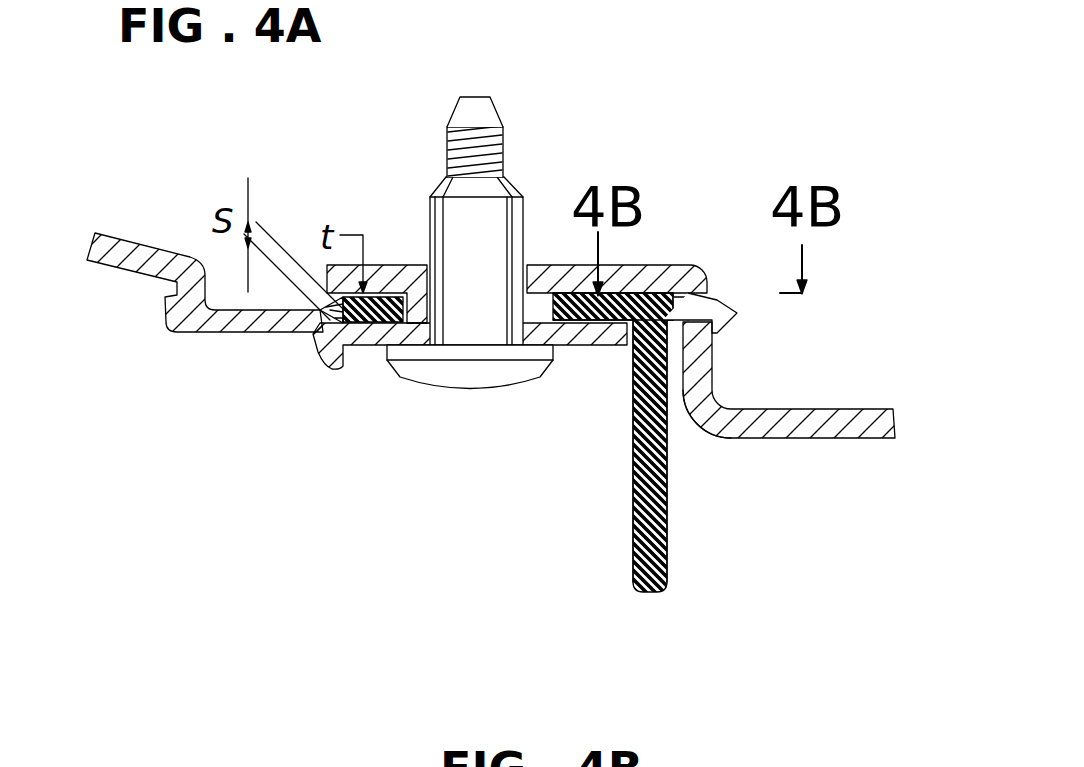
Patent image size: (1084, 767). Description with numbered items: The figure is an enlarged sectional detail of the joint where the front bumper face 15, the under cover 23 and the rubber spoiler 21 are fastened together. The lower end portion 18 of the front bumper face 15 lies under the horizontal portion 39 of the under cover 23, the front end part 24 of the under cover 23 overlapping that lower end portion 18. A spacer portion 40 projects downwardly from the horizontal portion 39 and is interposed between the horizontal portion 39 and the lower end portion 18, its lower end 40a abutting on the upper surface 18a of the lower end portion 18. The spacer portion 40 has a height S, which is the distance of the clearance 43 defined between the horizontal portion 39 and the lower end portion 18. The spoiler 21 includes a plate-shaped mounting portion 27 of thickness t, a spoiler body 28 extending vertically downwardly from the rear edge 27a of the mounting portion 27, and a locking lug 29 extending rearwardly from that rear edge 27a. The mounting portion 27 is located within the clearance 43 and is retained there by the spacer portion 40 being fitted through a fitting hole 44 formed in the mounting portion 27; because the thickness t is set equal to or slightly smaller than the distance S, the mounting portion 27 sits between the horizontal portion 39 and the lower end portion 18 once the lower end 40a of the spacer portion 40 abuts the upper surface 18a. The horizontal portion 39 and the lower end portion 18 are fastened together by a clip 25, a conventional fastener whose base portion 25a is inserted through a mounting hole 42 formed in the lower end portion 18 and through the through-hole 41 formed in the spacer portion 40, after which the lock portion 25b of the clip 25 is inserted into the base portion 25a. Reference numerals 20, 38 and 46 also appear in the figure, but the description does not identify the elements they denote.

The front bumper face 15 is at (127, 273).
The lower end portion 18 is at (470, 304).
The upper surface 18a is at (405, 322).
The fastening structure 20 is at (772, 132).
The spoiler 21 is at (664, 391).
The under cover 23 is at (804, 462).
The front end part 24 is at (400, 287).
The clip 25 is at (570, 174).
The base portion 25a is at (493, 207).
The lock portion 25b is at (488, 115).
The mounting portion 27 is at (627, 355).
The rear edge 27a is at (648, 293).
The spoiler body 28 is at (640, 530).
The locking lug 29 is at (740, 317).
The bent portion of second panel 38 is at (740, 398).
The horizontal portion 39 is at (425, 300).
The spacer portion 40 is at (396, 405).
The lower end 40a is at (410, 324).
The through-hole 41 is at (465, 257).
The mounting hole 42 is at (491, 384).
The clearance 43 is at (313, 337).
The fitting hole 44 is at (541, 272).
The notch 46 is at (718, 295).